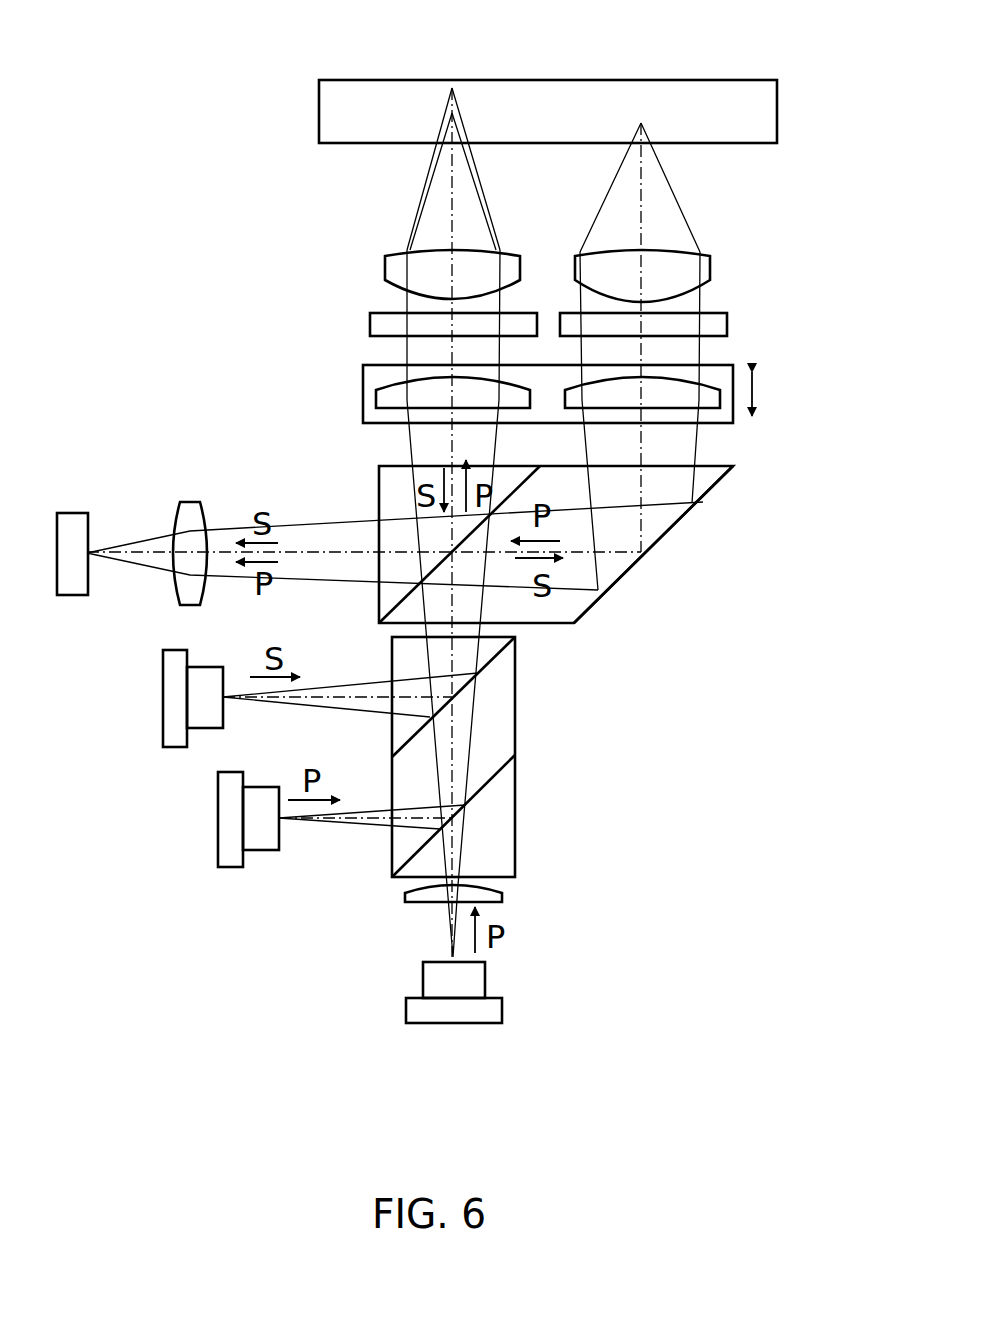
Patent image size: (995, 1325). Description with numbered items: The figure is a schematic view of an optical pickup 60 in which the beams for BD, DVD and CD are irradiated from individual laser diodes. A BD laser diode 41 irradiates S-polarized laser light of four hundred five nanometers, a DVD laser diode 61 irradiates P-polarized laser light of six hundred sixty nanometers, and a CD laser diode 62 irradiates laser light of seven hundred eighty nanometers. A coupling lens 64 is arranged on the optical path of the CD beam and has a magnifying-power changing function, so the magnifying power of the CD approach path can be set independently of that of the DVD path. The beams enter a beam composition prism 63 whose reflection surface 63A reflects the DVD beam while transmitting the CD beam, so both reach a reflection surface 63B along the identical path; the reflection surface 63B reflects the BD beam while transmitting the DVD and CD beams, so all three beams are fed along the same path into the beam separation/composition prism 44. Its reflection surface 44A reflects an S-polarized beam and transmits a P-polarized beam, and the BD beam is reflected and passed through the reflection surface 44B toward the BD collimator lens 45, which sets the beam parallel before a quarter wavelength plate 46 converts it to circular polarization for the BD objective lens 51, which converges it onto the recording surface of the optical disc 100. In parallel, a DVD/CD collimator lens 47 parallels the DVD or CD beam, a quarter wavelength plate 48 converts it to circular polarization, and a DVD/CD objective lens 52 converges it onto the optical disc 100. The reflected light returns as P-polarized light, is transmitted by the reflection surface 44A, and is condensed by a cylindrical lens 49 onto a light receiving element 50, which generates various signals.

The optical disc 100 is at (343, 80).
The DVD/CD objective lens 52 is at (385, 260).
The BD objective lens 51 is at (710, 262).
The quarter wavelength plate 48 is at (370, 316).
The quarter wavelength plate 46 is at (727, 318).
The BD collimator lens 45 is at (733, 366).
The DVD/CD collimator lens 47 is at (378, 391).
The light receiving element 50 is at (73, 513).
The cylindrical lens 49 is at (187, 502).
The beam separation/composition prism 44 is at (555, 553).
The reflection surface 44A is at (392, 611).
The reflection surface 44B is at (584, 612).
The BD laser diode 41 is at (163, 688).
The DVD laser diode 61 is at (218, 806).
The beam composition prism 63 is at (539, 764).
The reflection surface 63A is at (496, 777).
The reflection surface 63B is at (494, 658).
The coupling lens 64 is at (405, 896).
The CD laser diode 62 is at (406, 1011).
The optical pickup 60 is at (787, 1019).